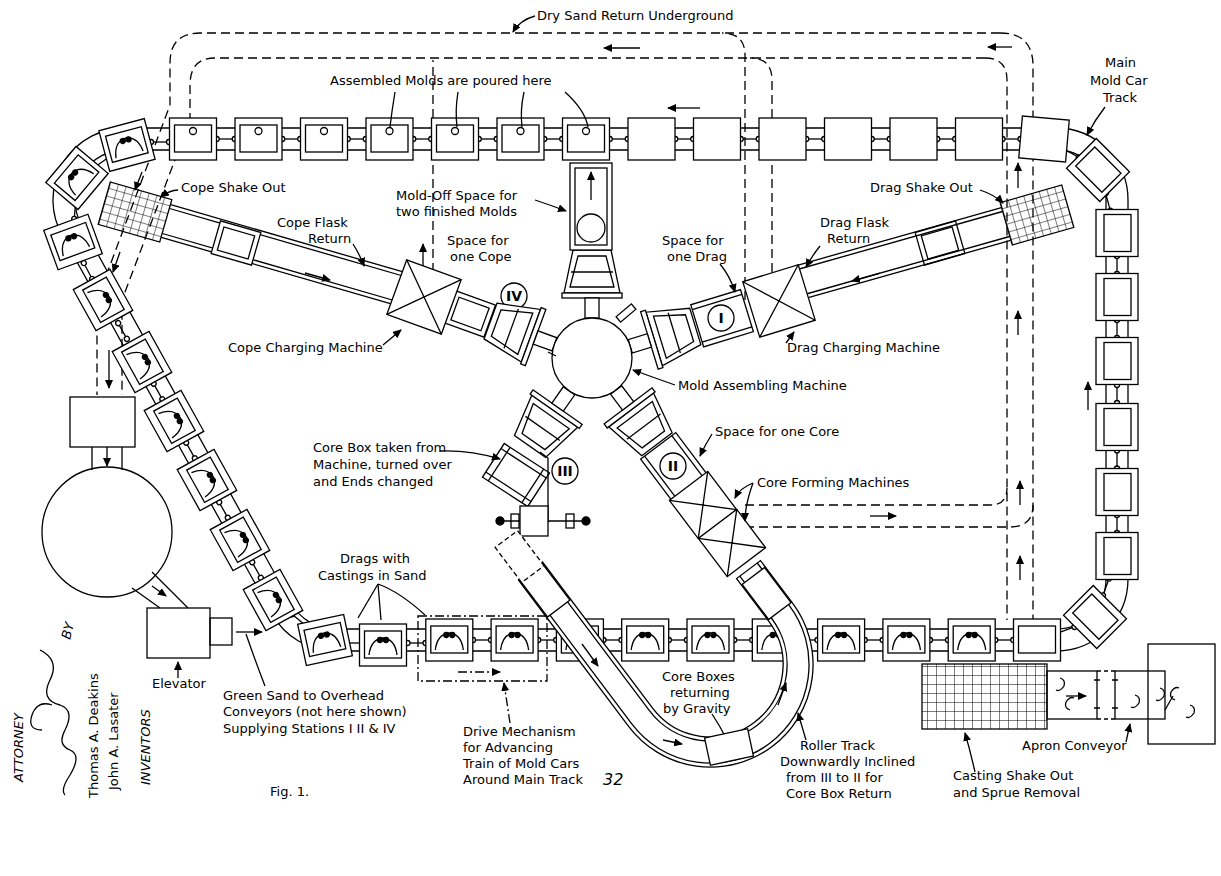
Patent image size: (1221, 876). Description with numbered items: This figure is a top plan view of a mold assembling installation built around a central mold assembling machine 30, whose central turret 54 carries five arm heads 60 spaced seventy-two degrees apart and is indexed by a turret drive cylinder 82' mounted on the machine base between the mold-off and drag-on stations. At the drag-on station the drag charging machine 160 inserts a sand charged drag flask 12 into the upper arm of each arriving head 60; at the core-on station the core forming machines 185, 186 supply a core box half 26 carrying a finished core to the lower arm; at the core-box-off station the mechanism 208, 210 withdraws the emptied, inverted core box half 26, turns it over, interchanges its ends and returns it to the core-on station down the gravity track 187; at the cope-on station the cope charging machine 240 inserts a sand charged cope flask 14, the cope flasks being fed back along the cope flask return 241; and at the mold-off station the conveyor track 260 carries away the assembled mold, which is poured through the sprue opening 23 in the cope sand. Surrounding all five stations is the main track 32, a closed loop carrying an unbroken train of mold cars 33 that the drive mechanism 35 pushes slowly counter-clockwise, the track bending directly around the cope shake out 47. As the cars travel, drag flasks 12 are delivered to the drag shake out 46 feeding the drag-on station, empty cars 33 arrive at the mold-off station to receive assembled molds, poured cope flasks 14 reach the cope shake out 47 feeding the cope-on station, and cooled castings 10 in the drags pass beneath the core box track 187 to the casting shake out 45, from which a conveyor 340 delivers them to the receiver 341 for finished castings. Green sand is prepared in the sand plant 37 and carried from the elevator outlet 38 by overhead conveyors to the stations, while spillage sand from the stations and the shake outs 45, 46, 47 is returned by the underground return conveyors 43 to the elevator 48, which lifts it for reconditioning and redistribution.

The underground return conveyors 43 is at (400, 33).
The main track 32 is at (293, 126).
The sprue opening 23 is at (193, 126).
The mold cars 33 is at (655, 120).
The drag flask 12 is at (332, 127).
The cope flask 14 is at (253, 255).
The castings 10 is at (58, 245).
The cope shake out 47 is at (145, 244).
The drag shake out 46 is at (1040, 243).
The cope flask return conveyor 241 is at (320, 293).
The cope charging machine 240 is at (424, 311).
The drag charging machine 160 is at (776, 333).
The arm heads 60 is at (667, 333).
The conveyor track 260 is at (612, 188).
The turret drive cylinder 82' is at (635, 299).
The central mold assembling machine 30 is at (581, 369).
The central turret 54 is at (555, 366).
The core box withdrawing and turning mechanism 208 is at (492, 490).
The core box withdrawing and turning mechanism 210 is at (530, 530).
The core forming machine 186 is at (688, 525).
The core forming machine 185 is at (710, 568).
The gravity track 187 is at (738, 590).
The core box half 26 is at (549, 613).
The drive mechanism 35 is at (495, 612).
The casting shake out 45 is at (921, 705).
The conveyor 340 is at (1138, 672).
The receiver 341 is at (1190, 752).
The elevator 48 is at (70, 425).
The sand plant 37 is at (63, 487).
The elevator outlet 38 is at (232, 648).